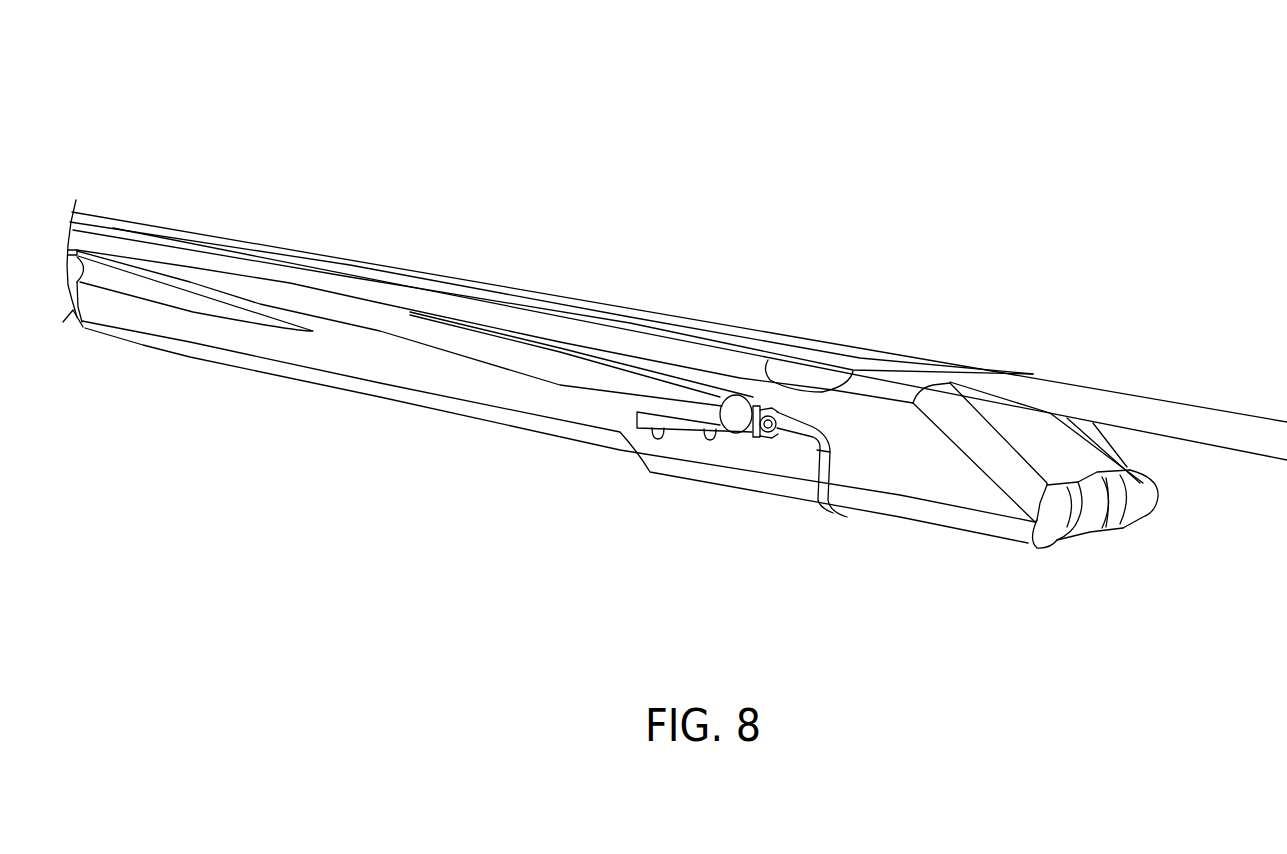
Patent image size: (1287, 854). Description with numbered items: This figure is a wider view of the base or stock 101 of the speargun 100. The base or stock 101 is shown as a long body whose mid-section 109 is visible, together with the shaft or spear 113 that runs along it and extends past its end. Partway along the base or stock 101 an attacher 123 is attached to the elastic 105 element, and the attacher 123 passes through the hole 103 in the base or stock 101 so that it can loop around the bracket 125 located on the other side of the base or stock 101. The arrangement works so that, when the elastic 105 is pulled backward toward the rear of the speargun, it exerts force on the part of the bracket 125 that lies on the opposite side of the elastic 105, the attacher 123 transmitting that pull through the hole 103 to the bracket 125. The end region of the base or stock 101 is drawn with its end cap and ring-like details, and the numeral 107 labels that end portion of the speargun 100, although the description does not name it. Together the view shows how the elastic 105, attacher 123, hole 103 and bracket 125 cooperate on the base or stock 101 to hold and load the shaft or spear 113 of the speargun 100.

The speargun 100 is at (549, 360).
The base or stock 101 is at (438, 276).
The hole 103 is at (766, 402).
The elastic element 105 is at (480, 363).
The end cap 107 is at (1130, 510).
The mid-section 109 is at (183, 327).
The shaft or spear 113 is at (1163, 393).
The attacher 123 is at (753, 434).
The bracket 125 is at (805, 510).